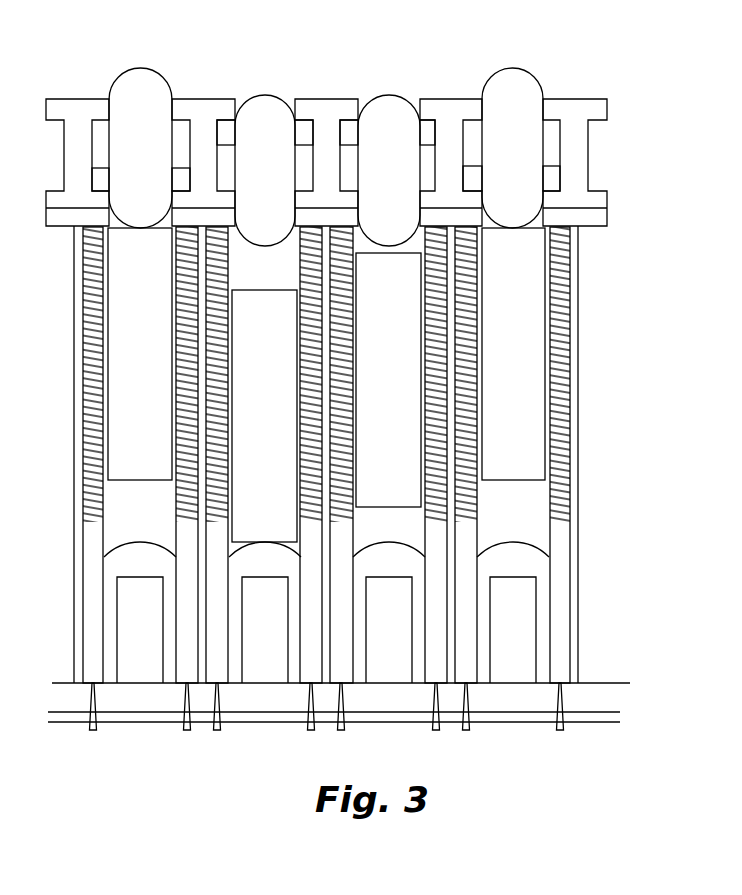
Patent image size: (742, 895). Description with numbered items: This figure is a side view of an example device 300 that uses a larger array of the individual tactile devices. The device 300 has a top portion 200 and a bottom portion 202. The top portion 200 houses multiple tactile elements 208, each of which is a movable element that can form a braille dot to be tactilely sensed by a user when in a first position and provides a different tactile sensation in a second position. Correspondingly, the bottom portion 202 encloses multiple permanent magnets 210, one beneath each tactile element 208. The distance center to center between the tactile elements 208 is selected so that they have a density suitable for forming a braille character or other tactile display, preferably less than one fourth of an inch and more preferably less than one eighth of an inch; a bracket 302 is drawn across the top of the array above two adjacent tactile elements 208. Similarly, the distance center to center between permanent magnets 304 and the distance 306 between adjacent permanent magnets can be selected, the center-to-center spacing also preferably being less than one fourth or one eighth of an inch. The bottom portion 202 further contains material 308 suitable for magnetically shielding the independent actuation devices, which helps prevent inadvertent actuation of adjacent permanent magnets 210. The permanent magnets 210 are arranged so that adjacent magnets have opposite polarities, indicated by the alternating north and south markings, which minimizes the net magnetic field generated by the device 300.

The top portion 200 is at (640, 97).
The bottom portion 202 is at (640, 212).
The tactile element 208 is at (124, 158).
The permanent magnet 210 is at (125, 351).
The device 300 is at (199, 736).
The coil pitch 302 is at (388, 90).
The distance center to center between permanent magnets 304 is at (388, 407).
The distance between permanent magnets 306 is at (178, 435).
The magnetically shielding material 308 is at (581, 380).